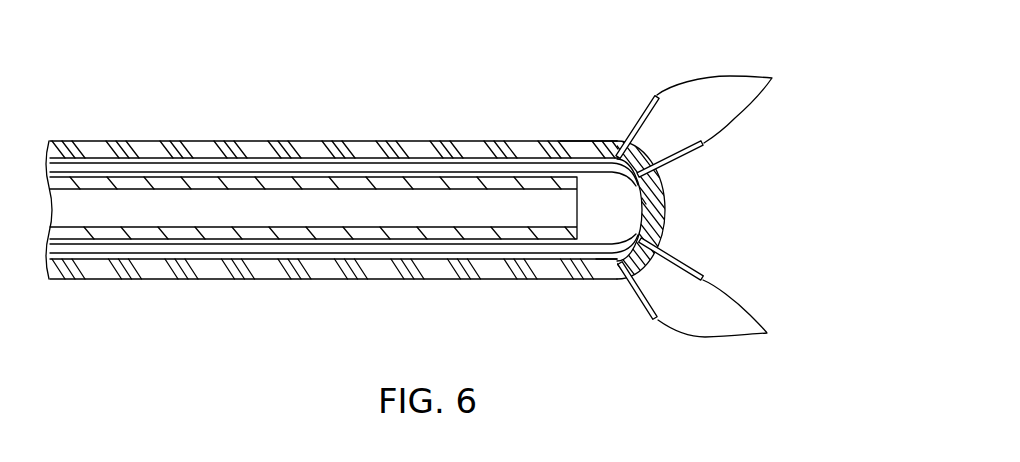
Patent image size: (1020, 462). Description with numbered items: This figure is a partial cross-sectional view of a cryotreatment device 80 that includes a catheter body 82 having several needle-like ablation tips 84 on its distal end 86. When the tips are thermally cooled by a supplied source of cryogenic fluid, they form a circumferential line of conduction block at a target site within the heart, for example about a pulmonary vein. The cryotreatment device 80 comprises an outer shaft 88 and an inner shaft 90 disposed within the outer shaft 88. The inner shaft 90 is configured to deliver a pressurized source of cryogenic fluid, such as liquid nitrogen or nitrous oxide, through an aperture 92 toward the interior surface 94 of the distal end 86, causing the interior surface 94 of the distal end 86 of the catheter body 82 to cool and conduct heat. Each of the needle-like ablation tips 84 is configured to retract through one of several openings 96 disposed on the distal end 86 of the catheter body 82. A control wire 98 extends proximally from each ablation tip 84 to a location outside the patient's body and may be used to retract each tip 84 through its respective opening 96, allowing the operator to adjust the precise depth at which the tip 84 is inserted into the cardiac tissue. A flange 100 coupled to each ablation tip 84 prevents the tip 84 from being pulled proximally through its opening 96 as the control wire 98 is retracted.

The cryotreatment device 80 is at (315, 58).
The catheter body 82 is at (234, 296).
The needle-like ablation tips 84 is at (772, 78).
The distal end 86 is at (596, 122).
The outer shaft 88 is at (207, 150).
The inner shaft 90 is at (150, 238).
The aperture 92 is at (598, 247).
The interior surface 94 is at (645, 200).
The openings 96 is at (643, 126).
The control wire 98 is at (298, 165).
The flange 100 is at (651, 98).